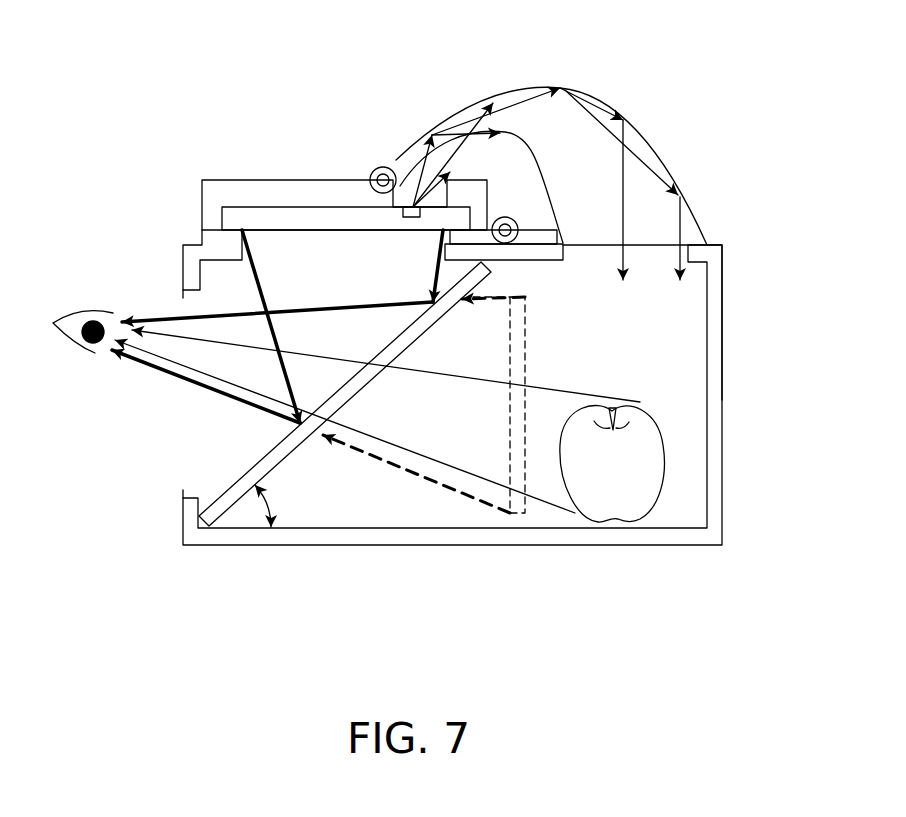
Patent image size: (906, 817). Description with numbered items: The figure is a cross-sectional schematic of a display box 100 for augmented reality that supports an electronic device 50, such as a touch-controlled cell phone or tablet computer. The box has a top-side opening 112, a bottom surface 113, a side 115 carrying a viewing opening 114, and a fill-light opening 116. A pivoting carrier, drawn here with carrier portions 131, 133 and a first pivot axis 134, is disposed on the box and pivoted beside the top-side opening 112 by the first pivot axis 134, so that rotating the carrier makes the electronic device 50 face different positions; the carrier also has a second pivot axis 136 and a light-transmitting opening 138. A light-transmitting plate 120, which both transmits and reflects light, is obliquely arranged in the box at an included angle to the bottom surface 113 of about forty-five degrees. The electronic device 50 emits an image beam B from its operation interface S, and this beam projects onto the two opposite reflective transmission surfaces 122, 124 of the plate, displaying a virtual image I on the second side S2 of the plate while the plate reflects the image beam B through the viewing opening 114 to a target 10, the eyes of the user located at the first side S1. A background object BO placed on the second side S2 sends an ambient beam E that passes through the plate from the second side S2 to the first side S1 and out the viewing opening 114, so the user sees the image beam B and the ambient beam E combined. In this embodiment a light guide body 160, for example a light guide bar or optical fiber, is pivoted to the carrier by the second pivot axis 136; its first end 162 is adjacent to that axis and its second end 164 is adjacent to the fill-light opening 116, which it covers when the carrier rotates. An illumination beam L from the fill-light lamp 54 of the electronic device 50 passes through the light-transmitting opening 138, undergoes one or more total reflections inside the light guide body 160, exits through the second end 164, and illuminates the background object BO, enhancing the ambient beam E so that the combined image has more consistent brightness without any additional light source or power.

The target 10 is at (77, 323).
The electronic device 50 is at (230, 218).
The fill-light lamp 54 is at (413, 207).
The display box 100 is at (800, 652).
The top-side opening 112 is at (305, 248).
The bottom surface 113 is at (538, 537).
The viewing opening 114 is at (163, 432).
The side 115 is at (185, 265).
The fill-light opening 116 is at (662, 245).
The light-transmitting plate 120 is at (232, 502).
The reflective transmission surface 122 is at (235, 485).
The reflective transmission surface 124 is at (292, 458).
The first bracket of light guide module 131 is at (213, 187).
The second bracket of light guide module 133 is at (537, 238).
The first pivot axis 134 is at (506, 240).
The second pivot axis 136 is at (375, 173).
The light-transmitting opening 138 is at (442, 185).
The light guide body 160 is at (638, 183).
The first end 162 is at (402, 163).
The second end 164 is at (652, 262).
The image beam B is at (148, 318).
The ambient beam E is at (172, 338).
The operation interface S is at (380, 232).
The first side S1 is at (228, 462).
The second side S2 is at (398, 492).
The illumination beam L is at (477, 113).
The image I is at (518, 342).
The background object BO is at (647, 470).